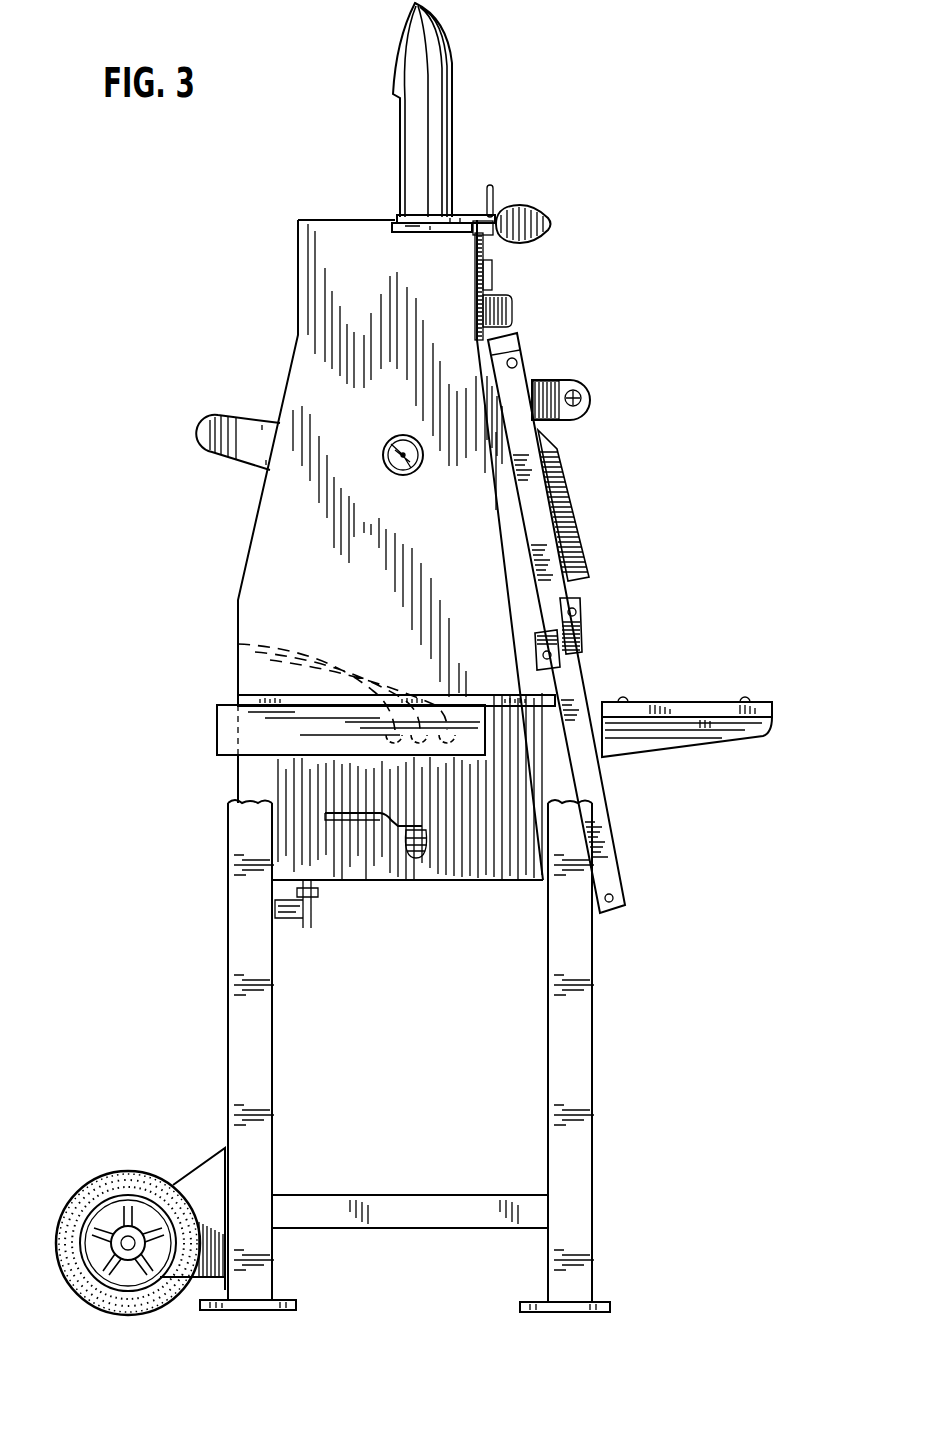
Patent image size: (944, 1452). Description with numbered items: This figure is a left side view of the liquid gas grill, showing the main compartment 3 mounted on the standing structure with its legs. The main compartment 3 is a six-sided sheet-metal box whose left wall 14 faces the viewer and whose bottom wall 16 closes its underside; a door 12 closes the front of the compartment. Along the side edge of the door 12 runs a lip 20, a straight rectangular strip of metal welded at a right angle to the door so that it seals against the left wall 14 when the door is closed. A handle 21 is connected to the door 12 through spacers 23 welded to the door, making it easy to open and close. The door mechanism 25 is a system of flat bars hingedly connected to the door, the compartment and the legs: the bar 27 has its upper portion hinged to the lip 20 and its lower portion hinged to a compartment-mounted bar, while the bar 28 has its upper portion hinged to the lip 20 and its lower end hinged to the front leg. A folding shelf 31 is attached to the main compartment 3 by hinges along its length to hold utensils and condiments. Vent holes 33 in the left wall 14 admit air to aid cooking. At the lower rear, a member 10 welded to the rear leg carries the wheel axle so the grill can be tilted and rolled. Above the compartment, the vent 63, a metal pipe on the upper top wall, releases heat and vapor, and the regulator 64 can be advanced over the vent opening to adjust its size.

The main compartment 3 is at (210, 508).
The member 10 is at (193, 1182).
The door 12 is at (547, 351).
The left wall 14 is at (302, 603).
The bottom wall 16 is at (462, 880).
The lip 20 is at (573, 593).
The handle 21 is at (588, 394).
The spacer 23 is at (567, 420).
The door mechanism 25 is at (590, 668).
The bar 27 is at (580, 518).
The bar 28 is at (614, 872).
The folding shelf 31 is at (687, 702).
The vent hole 33 is at (240, 643).
The vent 63 is at (440, 133).
The regulator 64 is at (530, 205).